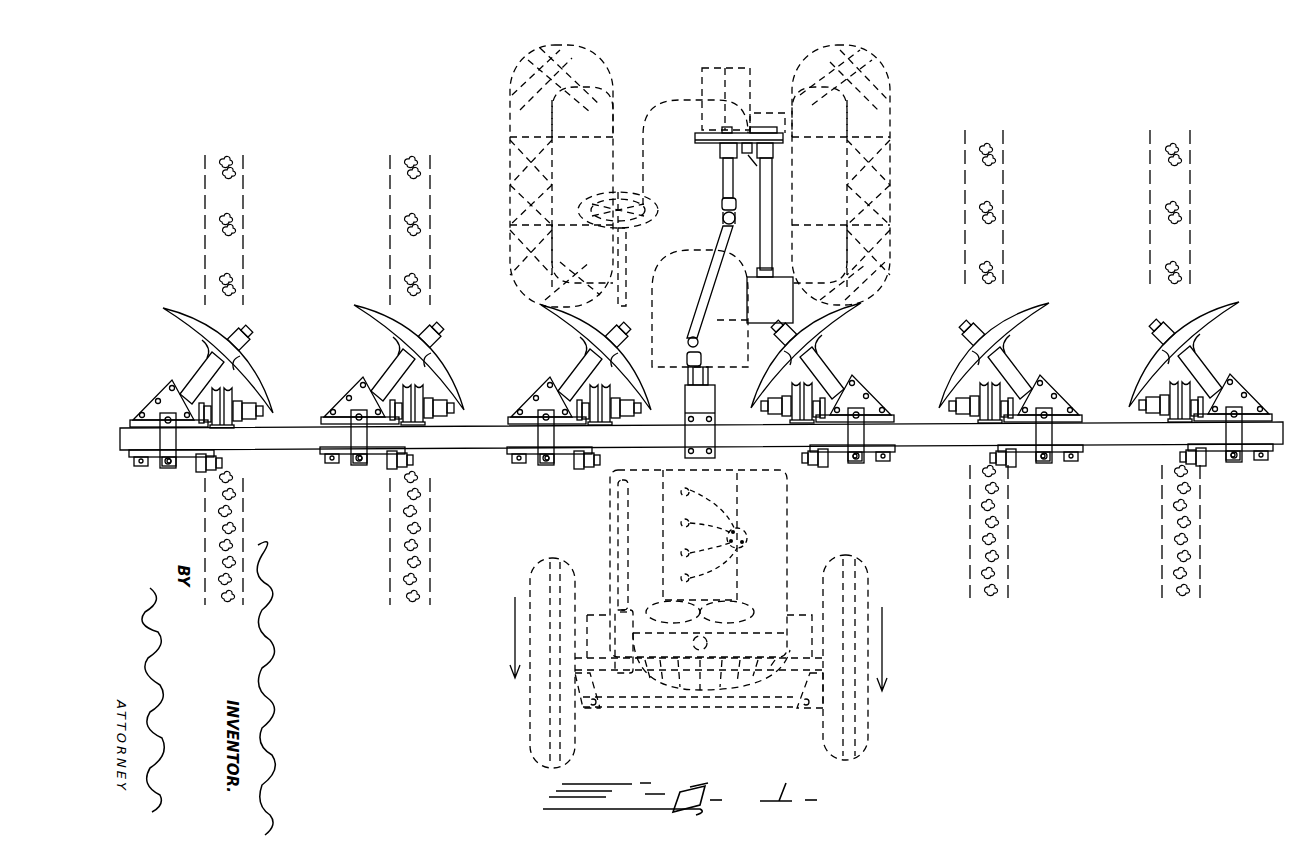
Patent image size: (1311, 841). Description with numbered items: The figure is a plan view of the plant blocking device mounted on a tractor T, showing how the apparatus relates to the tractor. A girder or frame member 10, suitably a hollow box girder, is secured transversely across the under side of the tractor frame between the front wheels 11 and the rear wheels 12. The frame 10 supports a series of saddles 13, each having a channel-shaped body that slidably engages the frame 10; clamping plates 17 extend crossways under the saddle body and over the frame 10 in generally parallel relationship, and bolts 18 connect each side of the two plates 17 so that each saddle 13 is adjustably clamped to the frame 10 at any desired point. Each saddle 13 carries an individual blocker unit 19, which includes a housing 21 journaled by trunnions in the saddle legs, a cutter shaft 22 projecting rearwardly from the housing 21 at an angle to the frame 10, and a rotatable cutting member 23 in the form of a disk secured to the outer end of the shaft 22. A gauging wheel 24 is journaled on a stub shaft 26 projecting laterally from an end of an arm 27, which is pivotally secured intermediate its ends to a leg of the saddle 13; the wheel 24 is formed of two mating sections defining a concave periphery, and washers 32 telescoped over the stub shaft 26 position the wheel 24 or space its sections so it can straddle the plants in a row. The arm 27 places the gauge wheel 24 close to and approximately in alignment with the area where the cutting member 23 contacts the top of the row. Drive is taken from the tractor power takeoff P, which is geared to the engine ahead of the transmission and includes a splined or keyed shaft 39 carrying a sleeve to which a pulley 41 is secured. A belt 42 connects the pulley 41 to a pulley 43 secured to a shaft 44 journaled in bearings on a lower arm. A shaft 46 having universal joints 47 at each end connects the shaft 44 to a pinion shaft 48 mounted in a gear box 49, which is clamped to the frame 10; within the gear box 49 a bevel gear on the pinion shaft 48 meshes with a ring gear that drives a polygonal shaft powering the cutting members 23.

The frame member 10 is at (1128, 433).
The front wheels 11 is at (866, 715).
The rear wheels 12 is at (892, 162).
The saddle 13 is at (900, 410).
The clamping plate 17 is at (170, 462).
The bolt 18 is at (172, 470).
The blocker unit 19 is at (1262, 392).
The housing 21 is at (160, 392).
The cutter shaft 22 is at (190, 378).
The cutting member 23 is at (170, 308).
The gauging wheel 24 is at (258, 408).
The stub shaft 26 is at (1128, 410).
The arm 27 is at (203, 370).
The washers 32 is at (258, 428).
The splined shaft 39 is at (773, 180).
The pulley 41 is at (766, 128).
The belt 42 is at (722, 150).
The pulley 43 is at (695, 133).
The shaft 44 is at (722, 178).
The shaft 46 is at (705, 298).
The universal joint 47 is at (724, 220).
The pinion shaft 48 is at (708, 377).
The gear box 49 is at (715, 440).
The power takeoff P is at (785, 300).
The tractor T is at (617, 548).
The engine E is at (728, 497).